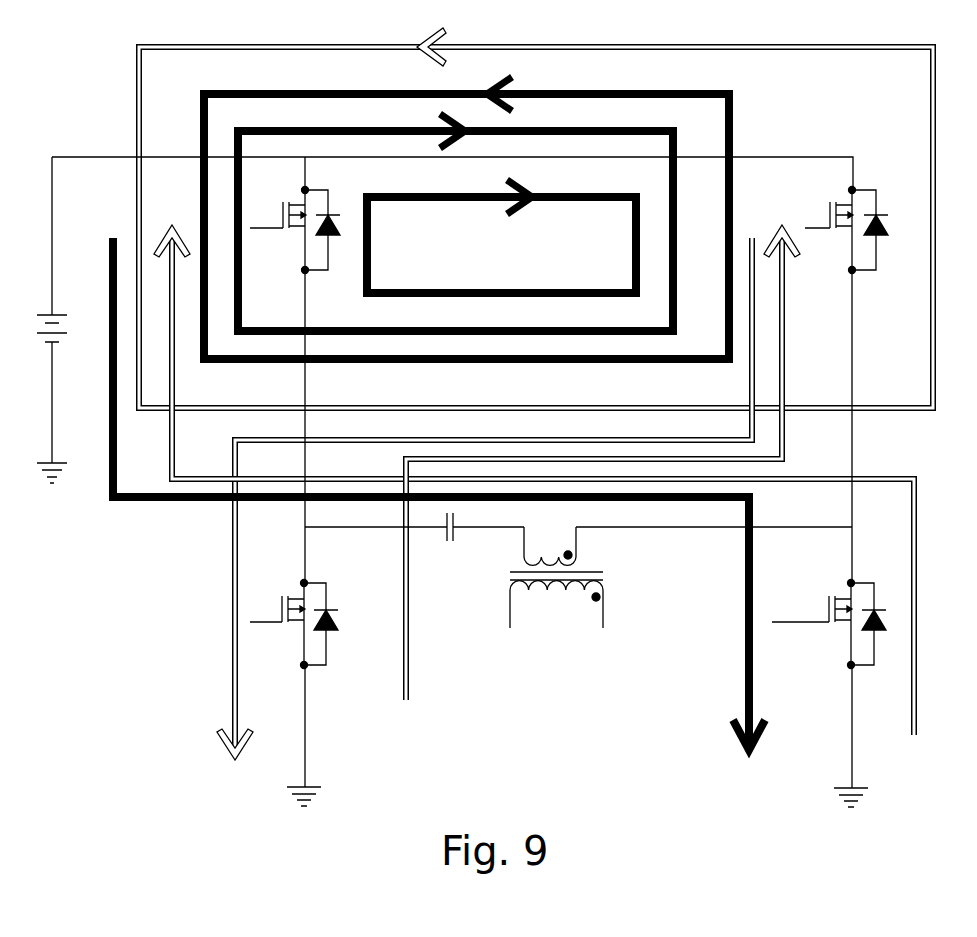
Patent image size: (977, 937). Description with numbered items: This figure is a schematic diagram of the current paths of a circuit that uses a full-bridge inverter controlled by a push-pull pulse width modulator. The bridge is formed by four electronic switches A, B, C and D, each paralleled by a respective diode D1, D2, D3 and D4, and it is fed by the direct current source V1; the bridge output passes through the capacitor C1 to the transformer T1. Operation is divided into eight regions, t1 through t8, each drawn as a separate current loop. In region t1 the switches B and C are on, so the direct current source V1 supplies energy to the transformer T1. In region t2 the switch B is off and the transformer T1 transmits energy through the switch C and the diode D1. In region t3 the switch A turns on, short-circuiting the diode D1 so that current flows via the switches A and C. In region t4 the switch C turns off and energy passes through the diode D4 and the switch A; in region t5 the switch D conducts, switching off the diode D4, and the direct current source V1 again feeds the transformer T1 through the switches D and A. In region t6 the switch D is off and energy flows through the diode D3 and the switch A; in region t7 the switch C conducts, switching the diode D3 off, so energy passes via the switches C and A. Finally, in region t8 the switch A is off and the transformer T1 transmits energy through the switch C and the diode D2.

The t1 region current path t1 is at (483, 512).
The t2 region current path t2 is at (501, 236).
The t3 region current path t3 is at (455, 222).
The t4 region current path t4 is at (534, 468).
The t5 region current path t5 is at (439, 512).
The t6 region current path t6 is at (536, 214).
The t7 region current path t7 is at (466, 213).
The t8 region current path t8 is at (603, 450).
The electronic switch A is at (279, 228).
The electronic switch B is at (279, 621).
The electronic switch C is at (830, 224).
The electronic switch D is at (813, 620).
The diode D1 is at (322, 218).
The diode D2 is at (329, 611).
The diode D3 is at (880, 221).
The diode D4 is at (877, 620).
The direct current VI V1 is at (63, 399).
The capacitor C1 is at (449, 539).
The transformer T1 is at (569, 577).